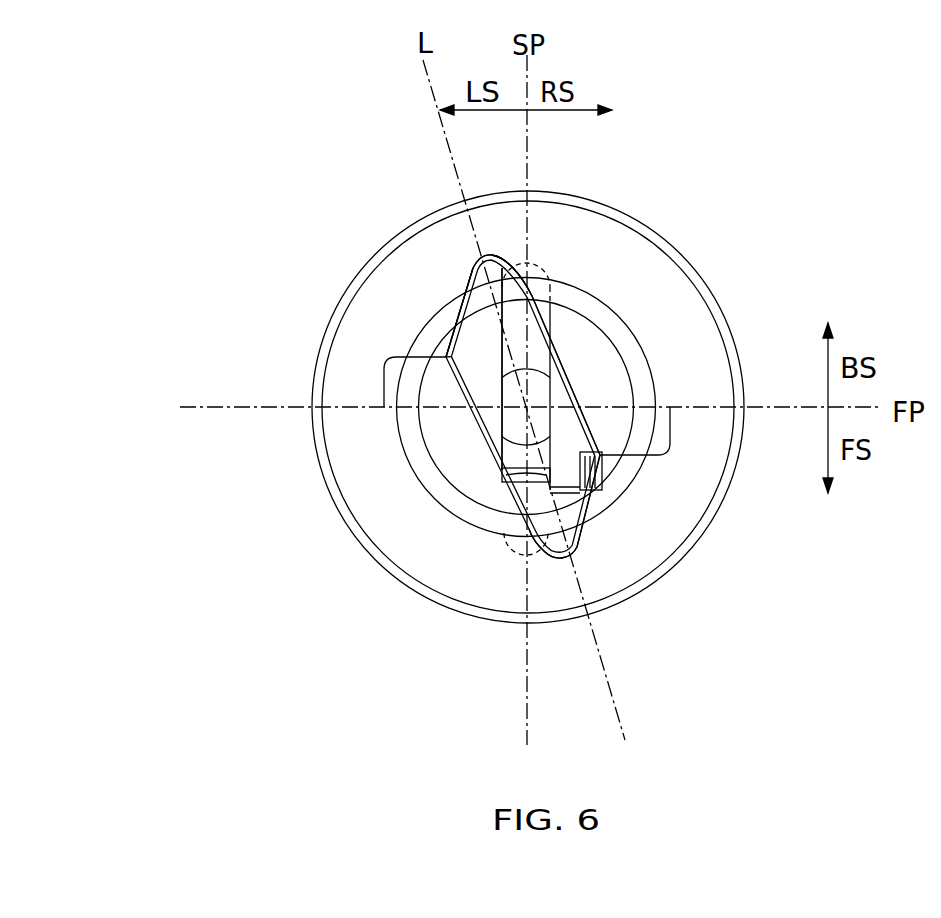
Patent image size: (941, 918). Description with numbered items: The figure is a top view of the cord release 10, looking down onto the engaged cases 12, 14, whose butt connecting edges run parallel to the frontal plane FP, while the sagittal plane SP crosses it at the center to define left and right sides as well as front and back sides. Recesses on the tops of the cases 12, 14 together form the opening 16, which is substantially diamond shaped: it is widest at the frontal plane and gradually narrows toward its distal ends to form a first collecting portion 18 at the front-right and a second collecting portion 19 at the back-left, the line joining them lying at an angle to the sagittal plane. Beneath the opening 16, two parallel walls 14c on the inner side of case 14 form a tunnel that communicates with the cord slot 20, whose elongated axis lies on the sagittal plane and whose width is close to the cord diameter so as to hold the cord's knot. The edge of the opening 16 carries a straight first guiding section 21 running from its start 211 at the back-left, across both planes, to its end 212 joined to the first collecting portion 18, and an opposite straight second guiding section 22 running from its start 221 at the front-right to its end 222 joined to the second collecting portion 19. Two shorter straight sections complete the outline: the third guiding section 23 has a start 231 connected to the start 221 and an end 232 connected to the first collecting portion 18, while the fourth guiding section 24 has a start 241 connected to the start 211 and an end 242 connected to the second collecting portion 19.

The cord release 10 is at (826, 142).
The case 12 is at (638, 587).
The case 14 is at (473, 268).
The walls 14c is at (462, 335).
The opening 16 is at (518, 340).
The first collecting portion 18 is at (562, 555).
The second collecting portion 19 is at (480, 325).
The cord slot 20 is at (538, 272).
The first guiding section 21 is at (500, 447).
The start 211 is at (440, 364).
The end 212 is at (555, 552).
The second guiding section 22 is at (562, 395).
The start 221 is at (588, 406).
The end 222 is at (520, 270).
The third guiding section 23 is at (590, 478).
The start 231 is at (598, 467).
The end 232 is at (583, 540).
The fourth guiding section 24 is at (463, 292).
The start 241 is at (446, 356).
The end 242 is at (486, 257).